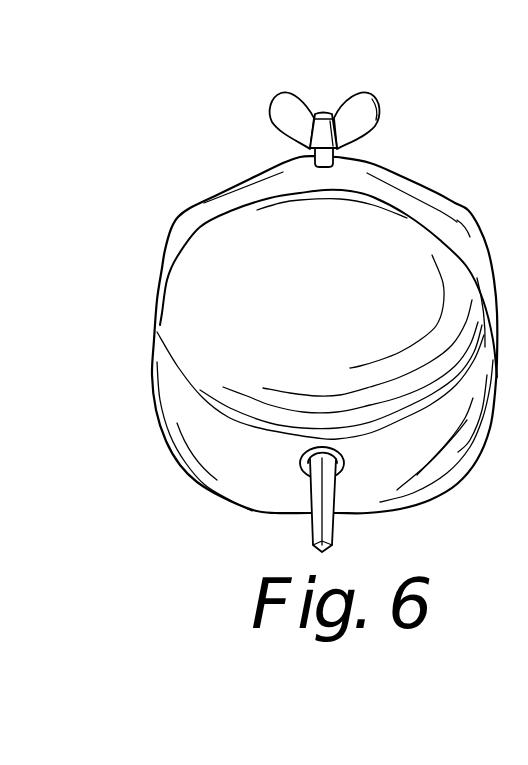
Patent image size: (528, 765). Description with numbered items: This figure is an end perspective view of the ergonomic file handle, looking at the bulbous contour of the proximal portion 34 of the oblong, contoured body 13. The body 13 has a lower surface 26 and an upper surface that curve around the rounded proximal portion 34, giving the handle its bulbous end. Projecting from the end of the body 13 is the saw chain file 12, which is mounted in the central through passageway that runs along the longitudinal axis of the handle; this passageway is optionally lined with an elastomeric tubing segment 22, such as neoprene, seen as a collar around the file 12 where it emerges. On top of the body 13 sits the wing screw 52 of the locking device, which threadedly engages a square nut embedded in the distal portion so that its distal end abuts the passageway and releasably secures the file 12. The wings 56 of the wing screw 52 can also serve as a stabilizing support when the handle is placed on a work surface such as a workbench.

The file 12 is at (332, 532).
The oblong contoured body 13 is at (148, 302).
The tubing segment 22 is at (345, 457).
The lower surface 26 is at (440, 212).
The proximal portion 34 is at (324, 314).
The wing screw 52 is at (313, 155).
The wings 56 is at (356, 108).